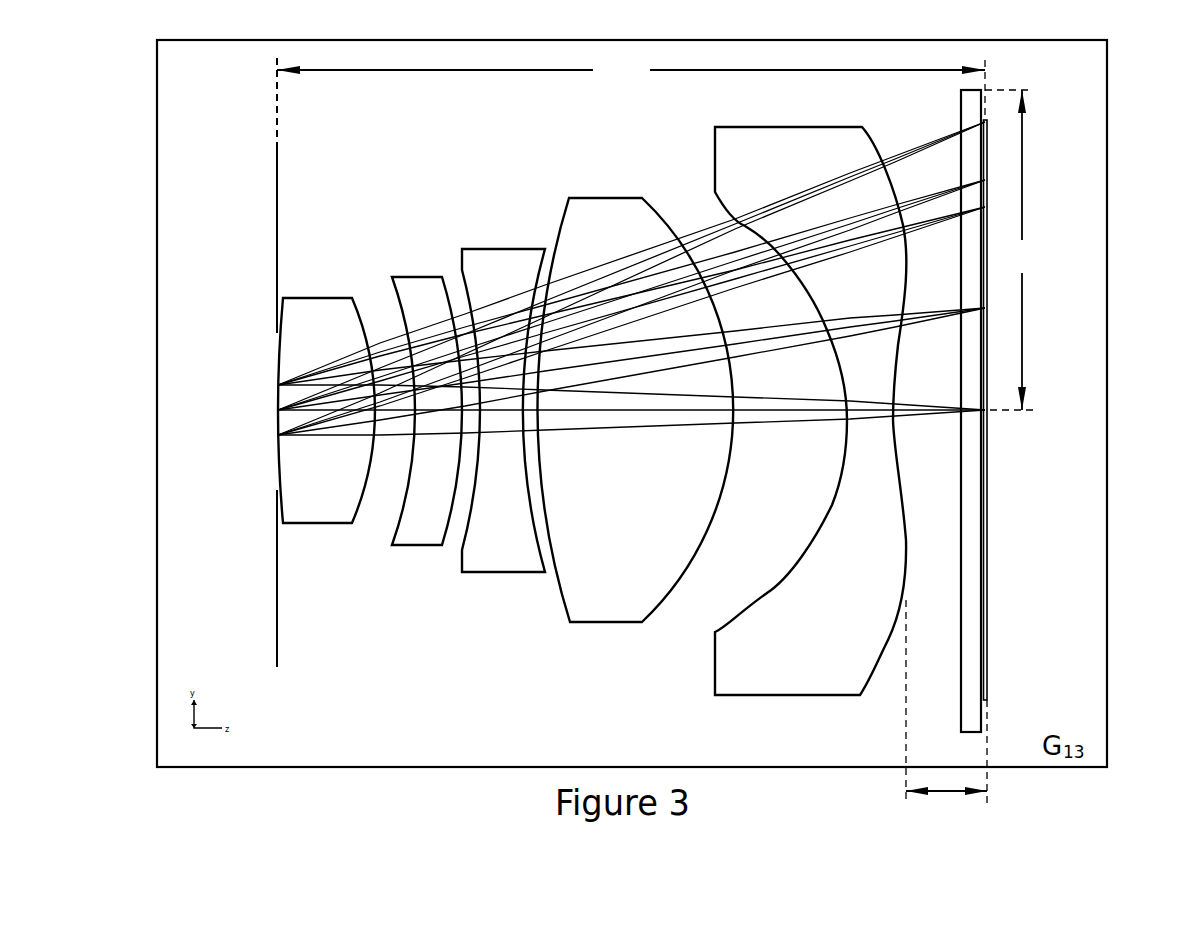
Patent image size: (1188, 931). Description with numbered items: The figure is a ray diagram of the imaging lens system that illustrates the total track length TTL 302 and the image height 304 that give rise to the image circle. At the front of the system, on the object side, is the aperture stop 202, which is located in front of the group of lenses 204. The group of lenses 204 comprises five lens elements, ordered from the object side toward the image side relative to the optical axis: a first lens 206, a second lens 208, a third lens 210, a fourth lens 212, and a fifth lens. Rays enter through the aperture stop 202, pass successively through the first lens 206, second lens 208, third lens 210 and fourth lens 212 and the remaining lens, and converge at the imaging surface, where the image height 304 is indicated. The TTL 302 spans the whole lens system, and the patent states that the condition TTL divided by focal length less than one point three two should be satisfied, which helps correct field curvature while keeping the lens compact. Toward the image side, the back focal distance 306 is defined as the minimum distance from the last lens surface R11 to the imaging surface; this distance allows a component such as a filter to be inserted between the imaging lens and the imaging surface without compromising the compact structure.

The aperture stop 202 is at (277, 620).
The group of lenses 204 is at (305, 513).
The first lens 206 is at (413, 538).
The second lens 208 is at (495, 565).
The third lens 210 is at (600, 612).
The fourth lens 212 is at (762, 683).
The surface R11 is at (887, 622).
The TTL 302 is at (640, 62).
The image height 304 is at (1037, 238).
The back focal distance 306 is at (975, 836).